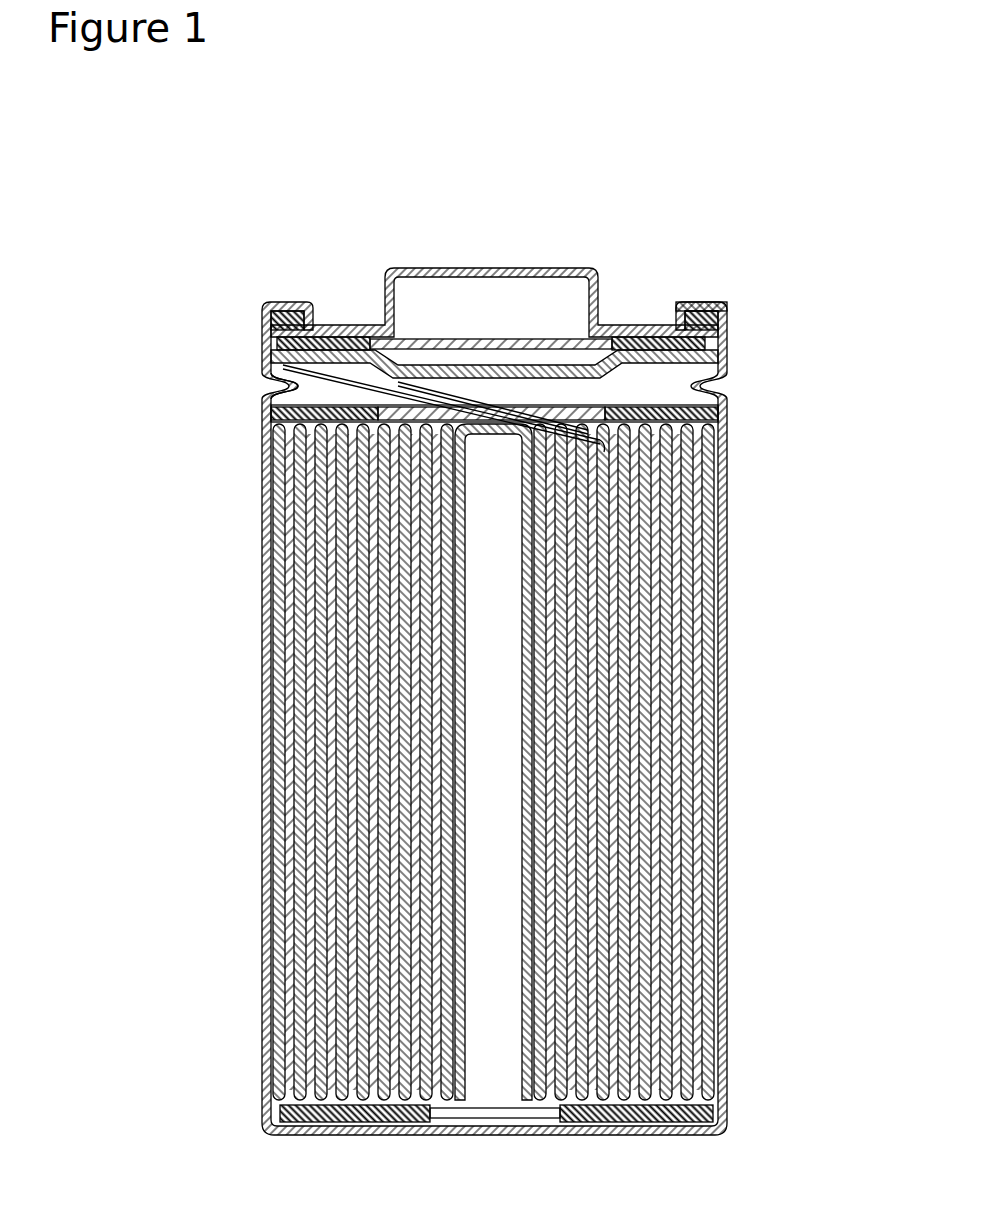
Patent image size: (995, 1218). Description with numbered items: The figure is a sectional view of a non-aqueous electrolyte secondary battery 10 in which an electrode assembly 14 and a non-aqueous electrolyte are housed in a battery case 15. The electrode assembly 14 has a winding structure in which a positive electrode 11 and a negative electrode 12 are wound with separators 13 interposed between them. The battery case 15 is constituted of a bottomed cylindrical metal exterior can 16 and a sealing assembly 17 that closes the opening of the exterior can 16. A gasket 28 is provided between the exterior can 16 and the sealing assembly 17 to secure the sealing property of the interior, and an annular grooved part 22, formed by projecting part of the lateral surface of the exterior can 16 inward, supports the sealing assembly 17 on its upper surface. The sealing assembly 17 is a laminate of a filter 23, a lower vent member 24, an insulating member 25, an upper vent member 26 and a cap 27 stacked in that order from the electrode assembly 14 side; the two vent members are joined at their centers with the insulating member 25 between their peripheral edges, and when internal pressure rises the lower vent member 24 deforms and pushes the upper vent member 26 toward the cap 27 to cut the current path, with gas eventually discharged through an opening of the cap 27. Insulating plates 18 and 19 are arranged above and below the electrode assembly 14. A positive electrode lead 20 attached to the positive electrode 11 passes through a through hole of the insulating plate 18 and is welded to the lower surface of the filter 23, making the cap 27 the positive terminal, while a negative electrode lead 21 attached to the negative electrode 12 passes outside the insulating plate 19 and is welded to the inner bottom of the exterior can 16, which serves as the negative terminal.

The non-aqueous electrolyte secondary battery 10 is at (746, 148).
The positive electrode 11 is at (727, 827).
The negative electrode 12 is at (727, 855).
The separators 13 is at (727, 882).
The electrode assembly 14 is at (814, 815).
The battery case 15 is at (708, 216).
The exterior can 16 is at (691, 304).
The sealing assembly 17 is at (627, 325).
The insulating plate 18 is at (727, 416).
The insulating plate 19 is at (727, 1113).
The positive electrode lead 20 is at (264, 377).
The negative electrode lead 21 is at (262, 1110).
The grooved part 22 is at (266, 393).
The filter 23 is at (493, 398).
The lower vent member 24 is at (397, 340).
The insulating member 25 is at (337, 325).
The upper vent member 26 is at (420, 340).
The cap 27 is at (562, 268).
The gasket 28 is at (727, 318).